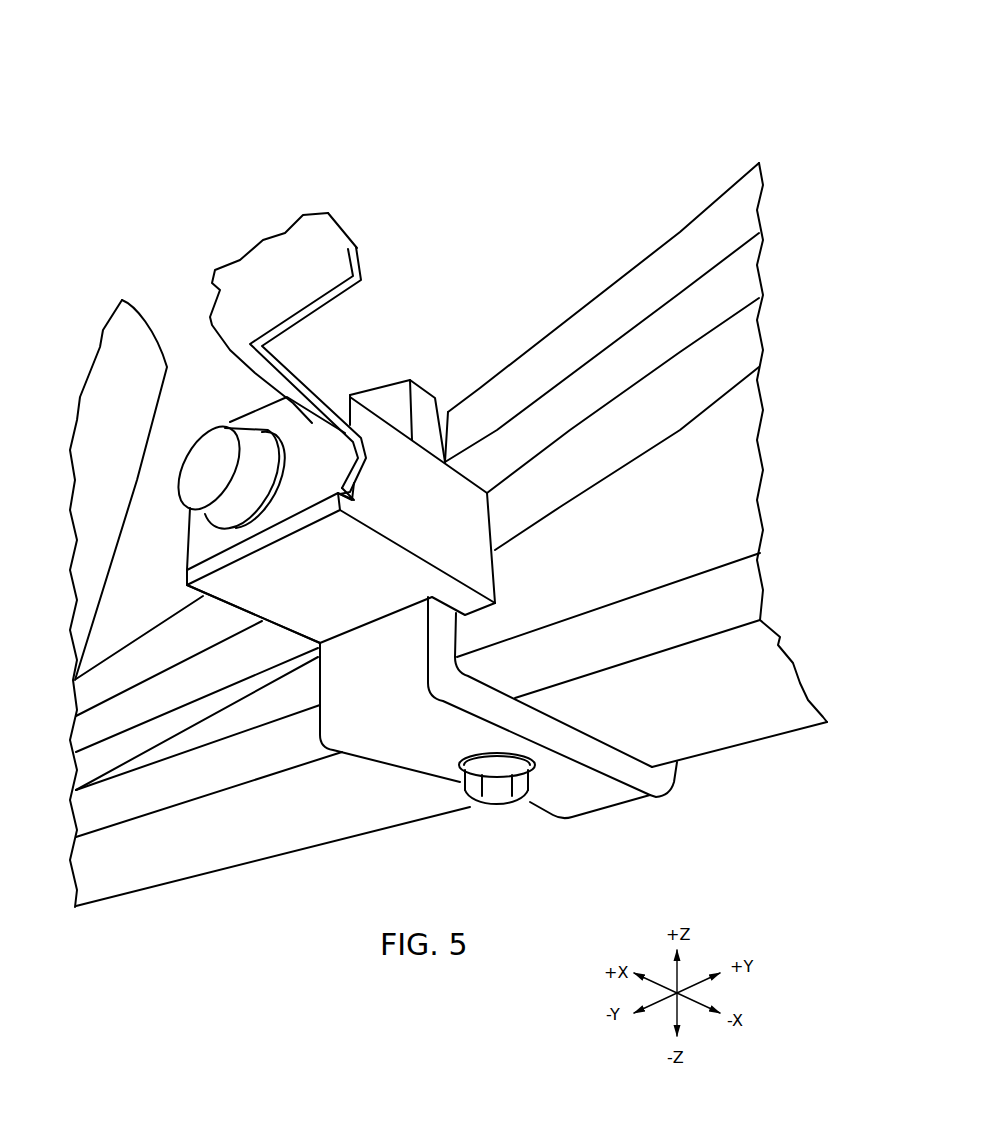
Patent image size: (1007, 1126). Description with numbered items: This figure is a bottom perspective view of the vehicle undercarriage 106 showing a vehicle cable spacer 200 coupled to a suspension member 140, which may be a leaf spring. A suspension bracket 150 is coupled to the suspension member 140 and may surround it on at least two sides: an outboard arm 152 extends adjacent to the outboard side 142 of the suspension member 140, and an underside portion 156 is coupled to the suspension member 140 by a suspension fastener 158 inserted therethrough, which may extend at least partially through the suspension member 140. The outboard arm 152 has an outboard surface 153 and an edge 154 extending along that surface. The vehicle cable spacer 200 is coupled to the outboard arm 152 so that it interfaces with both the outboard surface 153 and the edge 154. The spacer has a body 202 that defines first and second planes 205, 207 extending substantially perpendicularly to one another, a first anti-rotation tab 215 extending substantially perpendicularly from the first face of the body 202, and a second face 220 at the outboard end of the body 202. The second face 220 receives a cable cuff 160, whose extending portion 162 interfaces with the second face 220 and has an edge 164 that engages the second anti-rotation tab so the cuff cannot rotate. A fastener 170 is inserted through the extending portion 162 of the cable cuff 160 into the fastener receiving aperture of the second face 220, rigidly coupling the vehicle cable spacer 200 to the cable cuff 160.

The undercarriage 106 is at (373, 457).
The suspension member 140 is at (604, 378).
The outboard side 142 is at (745, 598).
The suspension bracket 150 is at (481, 742).
The outboard arm 152 is at (316, 708).
The outboard surface 153 is at (410, 380).
The edge 154 is at (445, 628).
The underside portion 156 is at (642, 797).
The suspension fastener 158 is at (498, 812).
The cable cuff 160 is at (303, 318).
The extending portion 162 is at (345, 247).
The edge 164 is at (285, 374).
The fastener 170 is at (217, 483).
The vehicle cable spacer 200 is at (388, 504).
The body 202 is at (455, 415).
The first plane 205 is at (474, 519).
The second plane 207 is at (253, 641).
The first anti-rotation tab 215 is at (495, 553).
The second face 220 is at (360, 405).